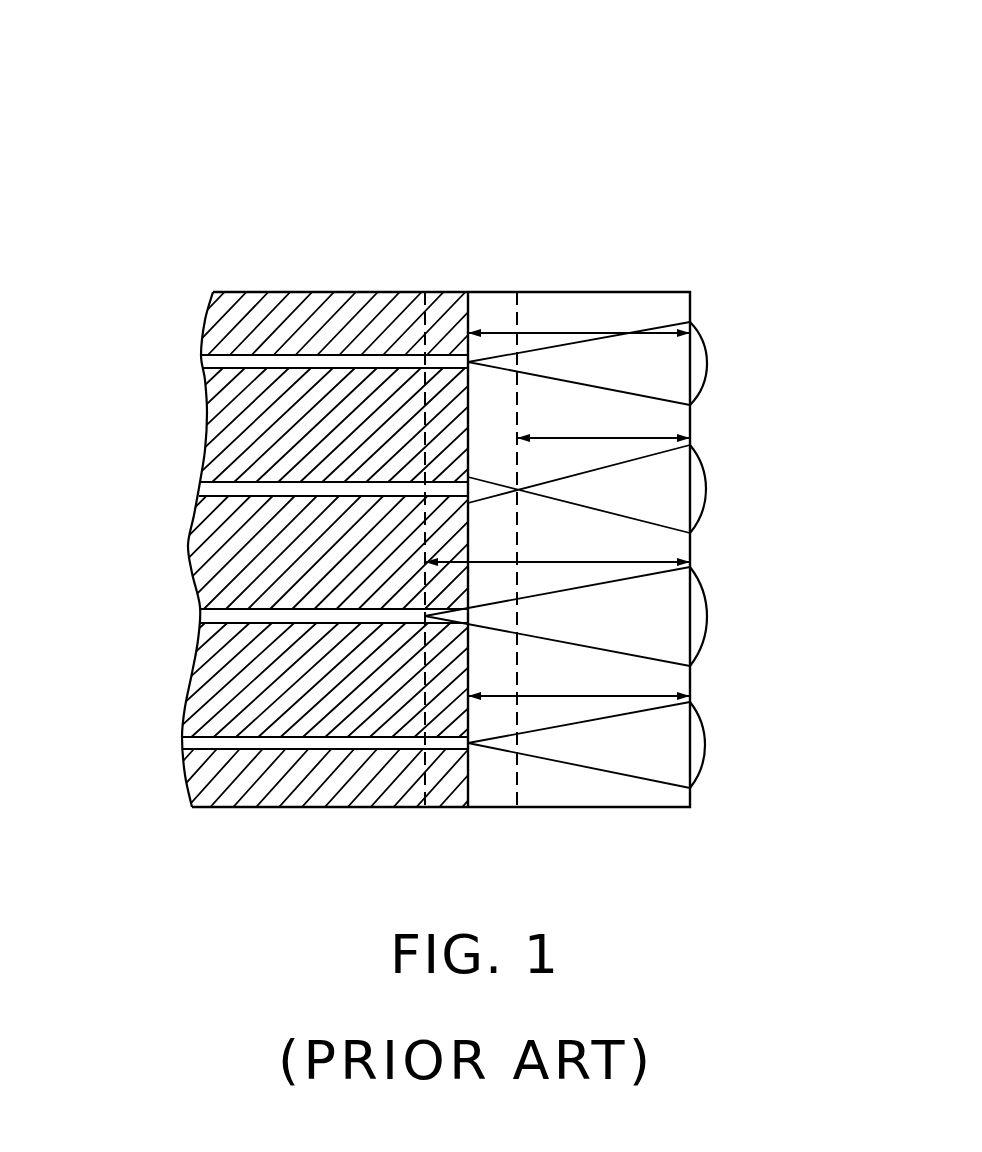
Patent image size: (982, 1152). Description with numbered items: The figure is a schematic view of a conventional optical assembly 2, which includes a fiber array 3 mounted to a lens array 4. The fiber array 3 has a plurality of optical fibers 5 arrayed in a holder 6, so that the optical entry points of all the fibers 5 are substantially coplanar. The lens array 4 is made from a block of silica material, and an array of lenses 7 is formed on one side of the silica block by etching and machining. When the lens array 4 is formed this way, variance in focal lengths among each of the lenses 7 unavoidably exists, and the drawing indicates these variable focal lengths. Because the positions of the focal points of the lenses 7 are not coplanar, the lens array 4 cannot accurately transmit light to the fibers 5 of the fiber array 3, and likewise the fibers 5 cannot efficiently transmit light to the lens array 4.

The optical assembly 2 is at (470, 33).
The fiber array 3 is at (385, 282).
The lens array 4 is at (607, 285).
The optical fibers 5 is at (220, 364).
The holder 6 is at (275, 320).
The lenses 7 is at (703, 368).